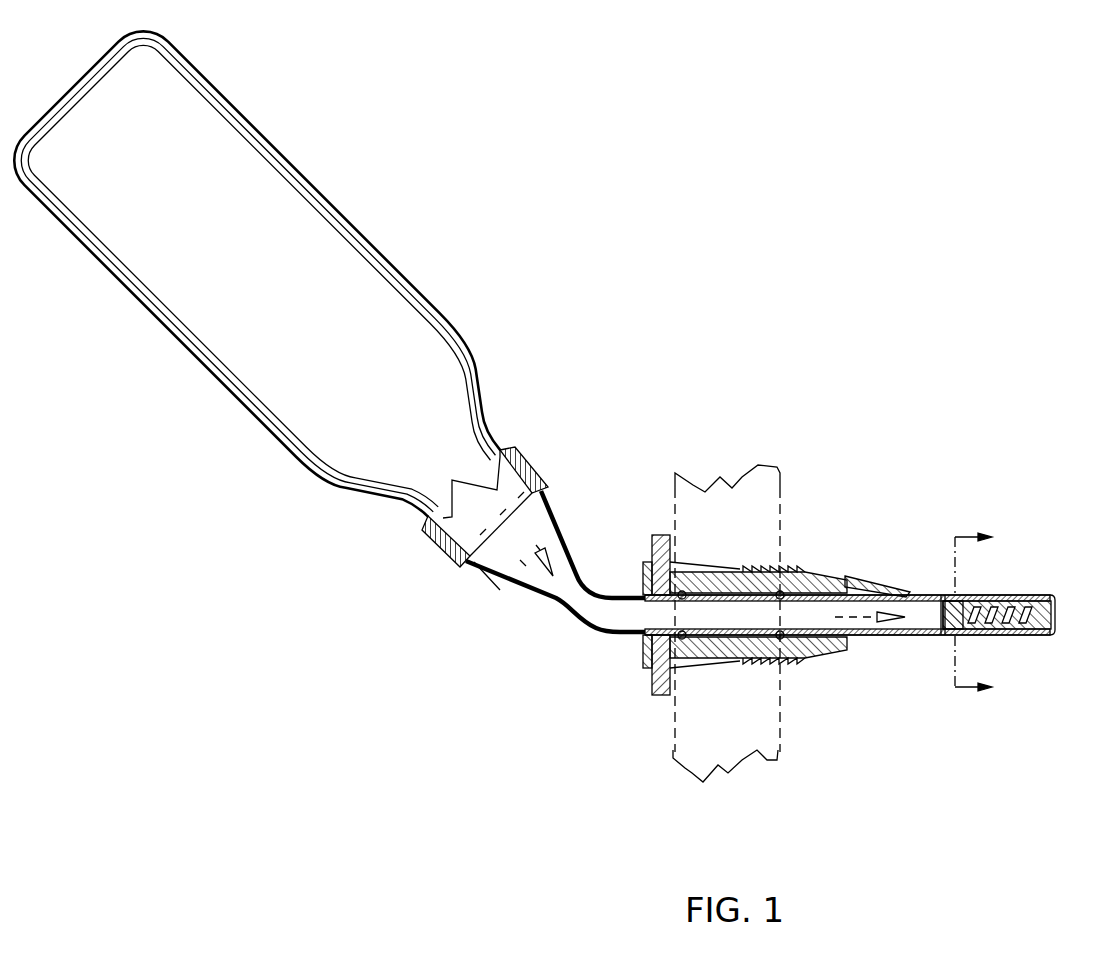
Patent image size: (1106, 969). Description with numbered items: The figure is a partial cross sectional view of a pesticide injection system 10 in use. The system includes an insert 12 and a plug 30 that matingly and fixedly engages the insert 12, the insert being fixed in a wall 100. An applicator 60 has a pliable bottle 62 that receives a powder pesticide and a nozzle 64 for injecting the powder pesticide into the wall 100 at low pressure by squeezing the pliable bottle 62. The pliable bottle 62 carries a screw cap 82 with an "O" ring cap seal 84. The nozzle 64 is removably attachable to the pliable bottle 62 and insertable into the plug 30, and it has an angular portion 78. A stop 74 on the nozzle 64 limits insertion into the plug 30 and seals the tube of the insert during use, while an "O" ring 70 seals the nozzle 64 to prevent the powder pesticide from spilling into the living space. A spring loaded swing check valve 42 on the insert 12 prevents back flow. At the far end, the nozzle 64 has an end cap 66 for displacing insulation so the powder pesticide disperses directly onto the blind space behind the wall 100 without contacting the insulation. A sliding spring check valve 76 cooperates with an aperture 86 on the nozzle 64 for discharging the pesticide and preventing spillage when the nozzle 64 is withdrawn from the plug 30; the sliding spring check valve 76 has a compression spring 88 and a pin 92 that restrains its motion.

The pesticide injection system 10 is at (779, 503).
The insert 12 is at (745, 563).
The plug 30 is at (651, 537).
The spring loaded swing check valve 42 is at (885, 588).
The applicator 60 is at (577, 530).
The pliable bottle 62 is at (348, 332).
The nozzle 64 is at (560, 627).
The end cap 66 is at (1030, 598).
The "O" ring 70 is at (800, 660).
The stop 74 is at (643, 658).
The sliding spring check valve 76 is at (944, 598).
The angular portion 78 is at (520, 580).
The screw cap 82 is at (534, 460).
The "O" ring cap seal 84 is at (447, 556).
The aperture 86 is at (950, 632).
The compression spring 88 is at (995, 632).
The pin 92 is at (940, 627).
The wall 100 is at (744, 711).